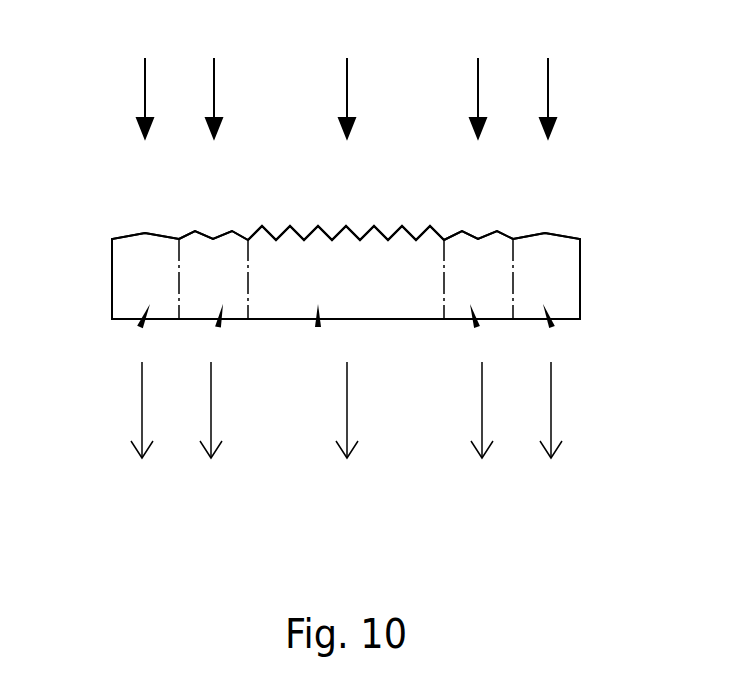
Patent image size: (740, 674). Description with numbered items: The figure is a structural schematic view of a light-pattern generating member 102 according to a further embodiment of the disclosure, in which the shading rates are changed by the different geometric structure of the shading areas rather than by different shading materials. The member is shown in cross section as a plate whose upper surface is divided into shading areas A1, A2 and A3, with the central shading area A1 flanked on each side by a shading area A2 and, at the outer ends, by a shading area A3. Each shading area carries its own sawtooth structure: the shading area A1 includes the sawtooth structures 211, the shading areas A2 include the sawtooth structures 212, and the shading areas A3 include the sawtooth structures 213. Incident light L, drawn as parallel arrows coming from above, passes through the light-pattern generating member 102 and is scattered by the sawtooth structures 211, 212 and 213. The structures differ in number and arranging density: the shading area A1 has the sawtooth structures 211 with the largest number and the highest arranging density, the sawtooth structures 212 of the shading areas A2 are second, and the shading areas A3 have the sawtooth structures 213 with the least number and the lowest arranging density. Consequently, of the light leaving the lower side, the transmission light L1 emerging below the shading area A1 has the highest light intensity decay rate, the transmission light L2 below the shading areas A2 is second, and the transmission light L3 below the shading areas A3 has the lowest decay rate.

The light-pattern generating member 102 is at (98, 40).
The incident light L is at (347, 97).
The sawtooth structure 211 is at (383, 237).
The sawtooth structure 212 is at (486, 232).
The sawtooth structure 213 is at (565, 237).
The shading area A1 is at (316, 328).
The shading area A2 is at (218, 328).
The shading area A3 is at (140, 328).
The transmission light L1 is at (343, 427).
The transmission light L2 is at (208, 425).
The transmission light L3 is at (139, 410).